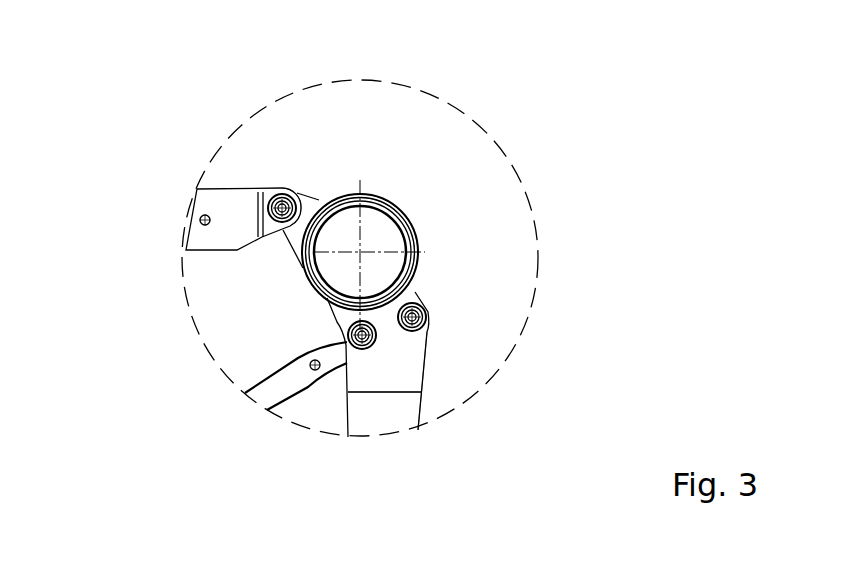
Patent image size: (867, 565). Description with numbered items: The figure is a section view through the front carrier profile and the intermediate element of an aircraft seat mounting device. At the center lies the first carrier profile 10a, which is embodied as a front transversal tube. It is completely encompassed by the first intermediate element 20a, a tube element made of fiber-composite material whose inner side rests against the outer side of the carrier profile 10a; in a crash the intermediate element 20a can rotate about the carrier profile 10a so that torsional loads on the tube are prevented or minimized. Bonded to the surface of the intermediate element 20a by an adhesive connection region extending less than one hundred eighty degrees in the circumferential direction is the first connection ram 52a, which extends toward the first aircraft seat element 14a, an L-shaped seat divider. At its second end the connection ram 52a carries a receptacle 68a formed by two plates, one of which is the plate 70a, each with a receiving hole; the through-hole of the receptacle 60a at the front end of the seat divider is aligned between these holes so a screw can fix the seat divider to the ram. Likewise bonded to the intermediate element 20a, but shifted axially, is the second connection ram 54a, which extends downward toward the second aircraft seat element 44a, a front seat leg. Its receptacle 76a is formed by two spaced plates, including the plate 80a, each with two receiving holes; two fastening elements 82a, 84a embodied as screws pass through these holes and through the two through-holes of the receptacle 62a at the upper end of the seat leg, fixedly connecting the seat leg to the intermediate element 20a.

The first carrier profile 10a is at (418, 240).
The first aircraft seat element 14a is at (197, 207).
The first intermediate element 20a is at (400, 212).
The second aircraft seat element 44a is at (363, 412).
The first connection ram 52a is at (321, 199).
The second connection ram 54a is at (343, 320).
The receptacle 60a is at (281, 178).
The receptacle 62a is at (396, 350).
The receptacle 68a is at (297, 183).
The plate 70a is at (342, 193).
The receptacle 76a is at (195, 239).
The plate 80a is at (387, 336).
The fastening element 82a is at (343, 322).
The fastening element 84a is at (378, 338).